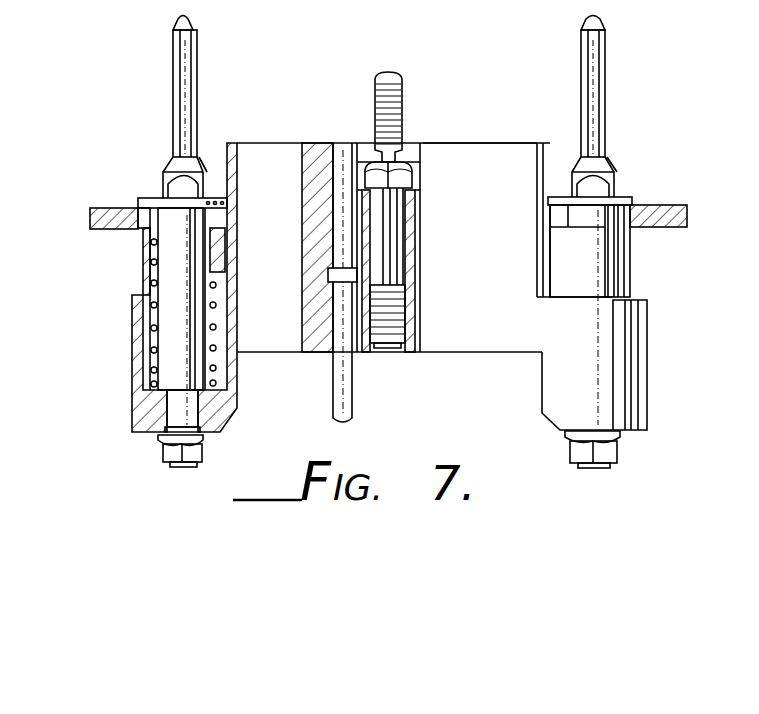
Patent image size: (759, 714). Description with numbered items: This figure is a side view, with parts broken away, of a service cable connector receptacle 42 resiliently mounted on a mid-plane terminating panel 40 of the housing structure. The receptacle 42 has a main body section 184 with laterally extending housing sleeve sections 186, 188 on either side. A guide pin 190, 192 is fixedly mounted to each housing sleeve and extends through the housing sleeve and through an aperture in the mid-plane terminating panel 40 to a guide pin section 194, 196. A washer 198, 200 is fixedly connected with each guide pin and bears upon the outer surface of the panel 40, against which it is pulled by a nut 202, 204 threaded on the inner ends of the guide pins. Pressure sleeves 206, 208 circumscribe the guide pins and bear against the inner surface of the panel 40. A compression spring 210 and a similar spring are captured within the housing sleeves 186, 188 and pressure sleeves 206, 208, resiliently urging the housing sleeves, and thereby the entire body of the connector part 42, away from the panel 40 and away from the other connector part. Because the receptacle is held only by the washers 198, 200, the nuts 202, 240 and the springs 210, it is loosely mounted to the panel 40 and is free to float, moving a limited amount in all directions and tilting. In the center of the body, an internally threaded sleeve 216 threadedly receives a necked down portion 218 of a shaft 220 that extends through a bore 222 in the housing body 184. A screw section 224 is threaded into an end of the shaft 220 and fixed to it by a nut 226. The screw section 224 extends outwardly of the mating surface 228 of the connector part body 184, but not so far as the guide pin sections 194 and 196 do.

The mid-plane terminating panel 40 is at (112, 208).
The service cable connector receptacle 42 is at (498, 105).
The main body section 184 is at (502, 143).
The housing sleeve section 186 is at (140, 343).
The housing sleeve section 188 is at (640, 365).
The guide pin 190 is at (207, 178).
The guide pin 192 is at (617, 183).
The guide pin section 194 is at (174, 78).
The guide pin section 196 is at (607, 103).
The washer 198 is at (150, 198).
The washer 200 is at (631, 200).
The nut 202 is at (163, 444).
The nut 204 is at (620, 452).
The pressure sleeve 206 is at (145, 258).
The pressure sleeve 208 is at (640, 258).
The compression spring 210 is at (143, 290).
The internally threaded sleeve 216 is at (418, 322).
The necked down portion 218 is at (397, 343).
The shaft 220 is at (403, 266).
The bore 222 is at (402, 232).
The screw section 224 is at (402, 111).
The nut 226 is at (418, 173).
The mating surface 228 is at (314, 143).
The nut 240 is at (383, 72).